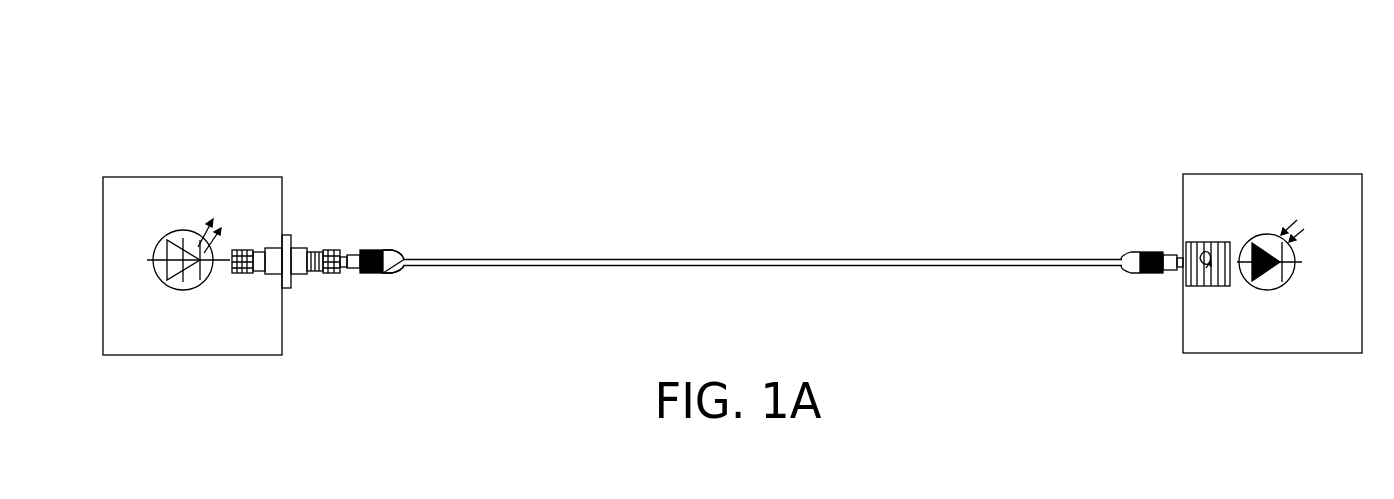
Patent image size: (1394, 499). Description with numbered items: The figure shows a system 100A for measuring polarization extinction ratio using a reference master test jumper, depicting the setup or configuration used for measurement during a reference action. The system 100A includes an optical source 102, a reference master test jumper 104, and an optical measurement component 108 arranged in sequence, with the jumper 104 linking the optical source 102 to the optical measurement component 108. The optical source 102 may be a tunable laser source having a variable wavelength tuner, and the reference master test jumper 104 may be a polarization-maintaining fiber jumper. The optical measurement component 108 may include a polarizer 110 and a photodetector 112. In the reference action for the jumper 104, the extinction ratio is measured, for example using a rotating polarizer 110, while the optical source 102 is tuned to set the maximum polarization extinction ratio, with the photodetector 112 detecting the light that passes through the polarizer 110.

The system 100A is at (982, 52).
The optical source 102 is at (337, 171).
The reference master test jumper 104 is at (1180, 171).
The optical measurement component 108 is at (1377, 171).
The polarizer 110 is at (1231, 243).
The photodetector 112 is at (1286, 284).